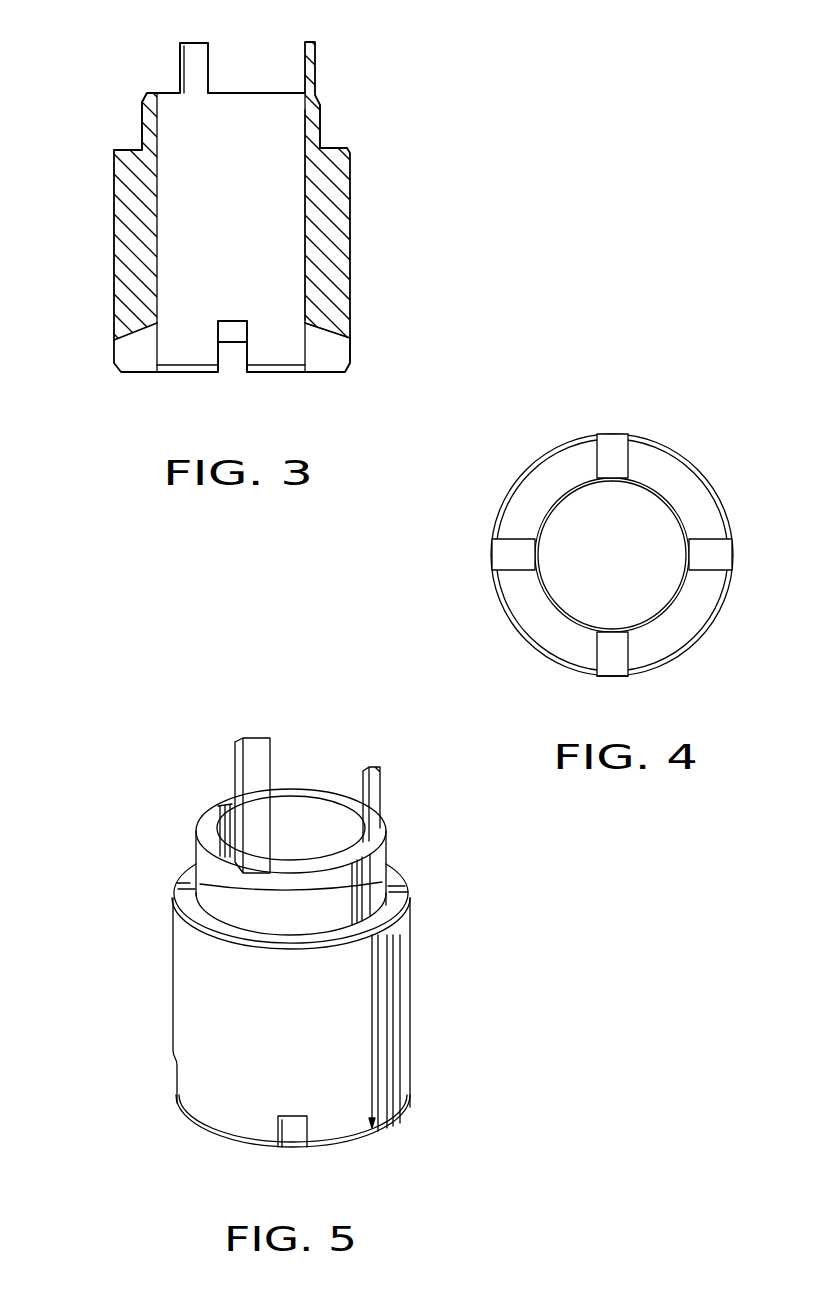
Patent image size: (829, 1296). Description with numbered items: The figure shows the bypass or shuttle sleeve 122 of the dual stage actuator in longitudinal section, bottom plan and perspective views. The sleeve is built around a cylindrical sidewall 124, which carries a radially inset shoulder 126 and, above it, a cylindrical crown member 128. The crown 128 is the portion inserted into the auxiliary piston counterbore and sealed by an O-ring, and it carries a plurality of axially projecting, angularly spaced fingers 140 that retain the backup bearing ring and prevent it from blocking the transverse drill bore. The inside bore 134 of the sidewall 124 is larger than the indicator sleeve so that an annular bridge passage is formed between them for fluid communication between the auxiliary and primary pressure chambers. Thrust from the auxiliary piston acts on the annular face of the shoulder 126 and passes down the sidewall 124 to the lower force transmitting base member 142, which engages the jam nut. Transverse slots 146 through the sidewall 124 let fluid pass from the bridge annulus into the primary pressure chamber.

In FIG. 3, the shuttle sleeve 122 is at (365, 208).
In FIG. 4, the shuttle sleeve 122 is at (613, 555).
In FIG. 5, the shuttle sleeve 122 is at (293, 945).
In FIG. 3, the cylindrical sidewall 124 is at (125, 235).
In FIG. 4, the cylindrical sidewall 124 is at (515, 480).
In FIG. 5, the cylindrical sidewall 124 is at (173, 990).
In FIG. 3, the radially inset shoulder 126 is at (137, 150).
In FIG. 5, the radially inset shoulder 126 is at (397, 877).
In FIG. 3, the cylindrical crown member 128 is at (322, 118).
In FIG. 5, the cylindrical crown member 128 is at (207, 888).
In FIG. 3, the inside bore 134 is at (298, 272).
In FIG. 3, the fingers 140 is at (179, 70).
In FIG. 5, the fingers 140 is at (385, 804).
In FIG. 3, the force transmitting base member 142 is at (269, 374).
In FIG. 4, the force transmitting base member 142 is at (690, 620).
In FIG. 5, the force transmitting base member 142 is at (337, 1147).
In FIG. 3, the transverse slots 146 is at (332, 342).
In FIG. 4, the transverse slots 146 is at (513, 540).
In FIG. 5, the transverse slots 146 is at (282, 1127).